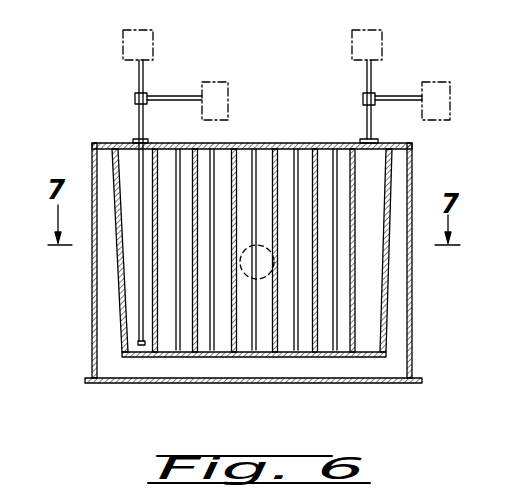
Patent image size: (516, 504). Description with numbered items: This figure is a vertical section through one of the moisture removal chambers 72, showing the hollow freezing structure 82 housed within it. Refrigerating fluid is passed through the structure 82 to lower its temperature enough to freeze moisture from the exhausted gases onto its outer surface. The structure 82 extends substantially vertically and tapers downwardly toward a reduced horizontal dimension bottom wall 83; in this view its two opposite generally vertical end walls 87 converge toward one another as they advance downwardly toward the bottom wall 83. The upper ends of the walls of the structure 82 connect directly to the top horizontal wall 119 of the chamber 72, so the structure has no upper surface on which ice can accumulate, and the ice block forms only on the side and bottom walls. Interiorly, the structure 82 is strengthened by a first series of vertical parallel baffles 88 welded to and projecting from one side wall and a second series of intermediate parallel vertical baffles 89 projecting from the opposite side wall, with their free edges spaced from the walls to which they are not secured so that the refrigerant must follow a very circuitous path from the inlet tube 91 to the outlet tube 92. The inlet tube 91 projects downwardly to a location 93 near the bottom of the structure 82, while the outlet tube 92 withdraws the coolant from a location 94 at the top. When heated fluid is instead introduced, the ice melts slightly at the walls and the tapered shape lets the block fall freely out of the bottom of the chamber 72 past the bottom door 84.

The moisture removal chamber 72 is at (410, 352).
The hollow freezing structure 82 is at (396, 207).
The bottom wall 83 is at (378, 358).
The bottom door 84 is at (338, 383).
The end walls 87 is at (122, 318).
The first series of vertical parallel baffles 88 is at (216, 156).
The second series of intermediate parallel vertical baffles 89 is at (283, 157).
The inlet tube 91 is at (137, 158).
The outlet tube 92 is at (367, 120).
The inlet location 93 is at (141, 345).
The outlet location 94 is at (370, 146).
The top horizontal wall 119 is at (298, 152).